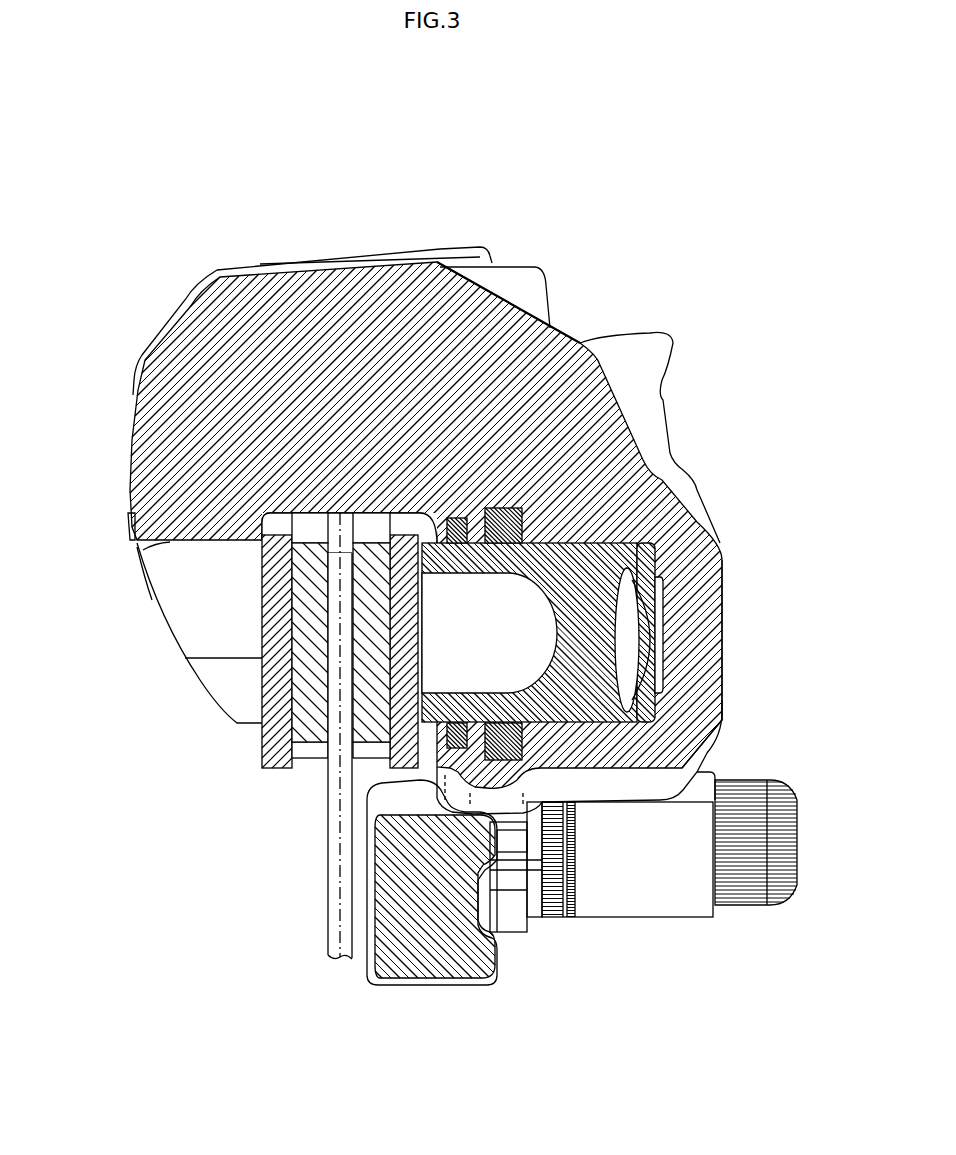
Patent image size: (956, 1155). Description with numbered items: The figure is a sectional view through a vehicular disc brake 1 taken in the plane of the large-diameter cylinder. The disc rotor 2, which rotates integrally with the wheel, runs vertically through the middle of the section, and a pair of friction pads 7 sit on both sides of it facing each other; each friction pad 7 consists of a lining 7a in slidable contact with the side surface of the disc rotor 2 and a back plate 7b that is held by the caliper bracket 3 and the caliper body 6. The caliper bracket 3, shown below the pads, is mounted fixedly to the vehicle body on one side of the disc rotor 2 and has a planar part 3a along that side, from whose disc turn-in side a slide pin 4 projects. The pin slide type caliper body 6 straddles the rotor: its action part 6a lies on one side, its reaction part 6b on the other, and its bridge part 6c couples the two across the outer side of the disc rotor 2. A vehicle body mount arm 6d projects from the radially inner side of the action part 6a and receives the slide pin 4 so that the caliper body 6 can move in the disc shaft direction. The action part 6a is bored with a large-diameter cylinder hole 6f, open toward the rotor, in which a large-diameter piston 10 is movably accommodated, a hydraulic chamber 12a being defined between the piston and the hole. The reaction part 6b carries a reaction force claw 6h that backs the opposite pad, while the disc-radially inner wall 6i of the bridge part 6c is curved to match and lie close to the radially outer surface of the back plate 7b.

The vehicular disc brake 1 is at (424, 150).
The disc rotor 2 is at (330, 866).
The caliper bracket 3 is at (432, 925).
The planar part 3a is at (447, 965).
The slide pin 4 is at (507, 878).
The caliper body 6 is at (434, 570).
The action part 6a is at (710, 605).
The reaction part 6b is at (145, 498).
The bridge part 6c is at (325, 275).
The vehicle body mount arm 6d is at (635, 890).
The large-diameter cylinder hole 6f is at (578, 715).
The reaction force claw 6h is at (230, 685).
The disc-radially inner wall 6i is at (362, 520).
The friction pad 7 is at (341, 640).
The lining 7a is at (307, 575).
The back plate 7b is at (273, 618).
The large-diameter piston 10 is at (593, 545).
The hydraulic chamber 12a is at (653, 663).